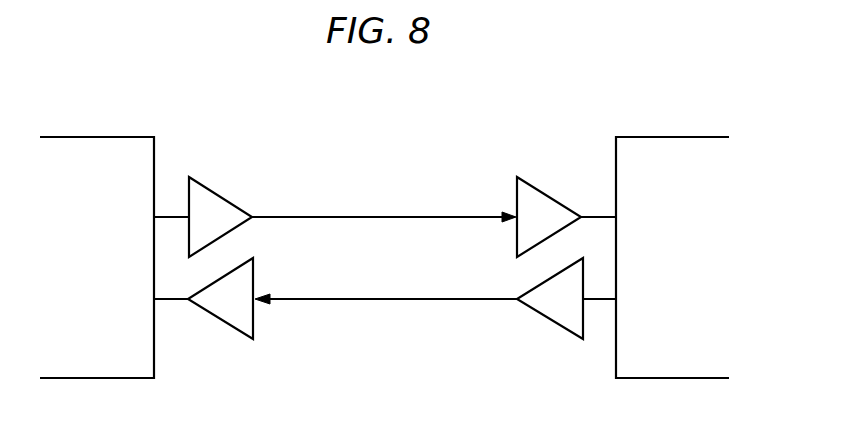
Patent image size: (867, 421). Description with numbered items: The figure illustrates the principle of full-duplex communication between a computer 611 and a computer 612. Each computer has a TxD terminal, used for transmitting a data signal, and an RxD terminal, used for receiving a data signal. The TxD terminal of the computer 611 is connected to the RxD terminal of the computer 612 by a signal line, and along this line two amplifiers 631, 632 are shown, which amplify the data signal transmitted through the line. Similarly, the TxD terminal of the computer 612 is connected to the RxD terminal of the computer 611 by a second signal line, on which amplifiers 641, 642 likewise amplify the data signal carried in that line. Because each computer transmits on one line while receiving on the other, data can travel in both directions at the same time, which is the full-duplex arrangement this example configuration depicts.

The computer 611 is at (66, 137).
The computer 612 is at (648, 137).
The amplifier 631 is at (215, 193).
The amplifier 632 is at (545, 191).
The amplifier 641 is at (545, 320).
The amplifier 642 is at (216, 320).